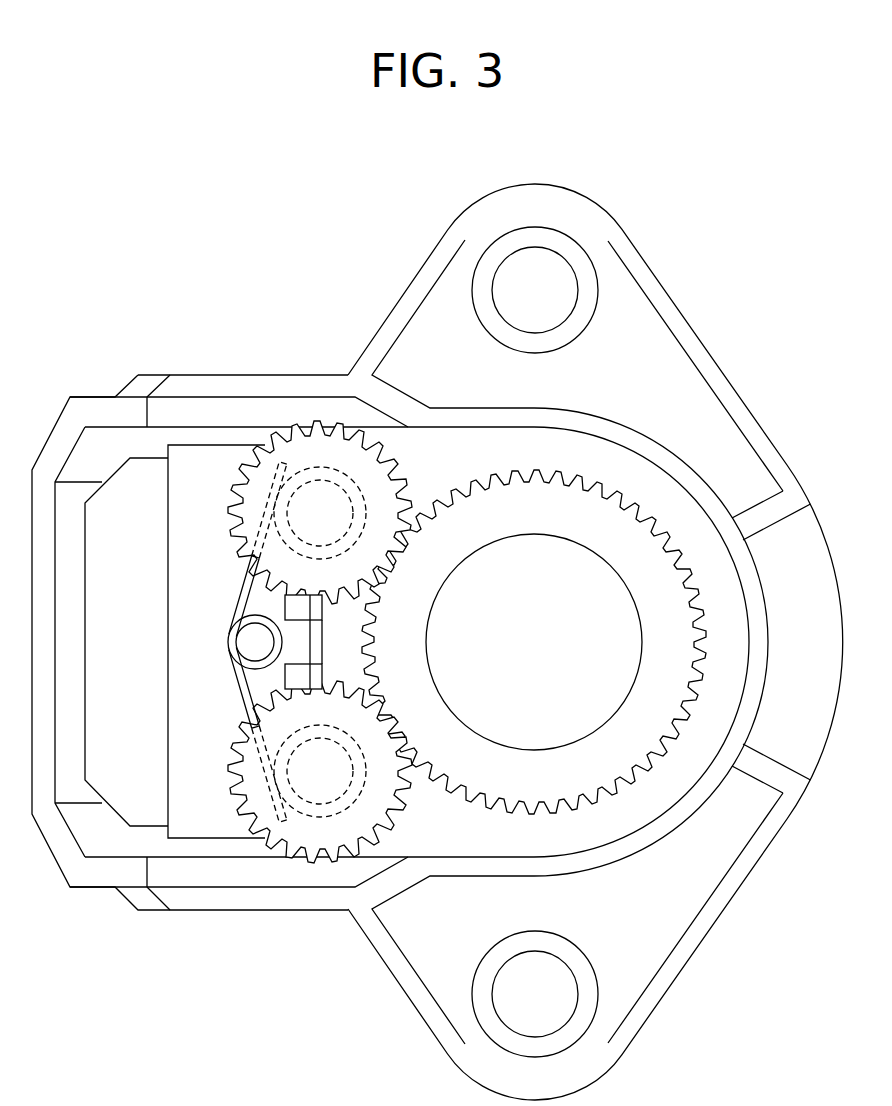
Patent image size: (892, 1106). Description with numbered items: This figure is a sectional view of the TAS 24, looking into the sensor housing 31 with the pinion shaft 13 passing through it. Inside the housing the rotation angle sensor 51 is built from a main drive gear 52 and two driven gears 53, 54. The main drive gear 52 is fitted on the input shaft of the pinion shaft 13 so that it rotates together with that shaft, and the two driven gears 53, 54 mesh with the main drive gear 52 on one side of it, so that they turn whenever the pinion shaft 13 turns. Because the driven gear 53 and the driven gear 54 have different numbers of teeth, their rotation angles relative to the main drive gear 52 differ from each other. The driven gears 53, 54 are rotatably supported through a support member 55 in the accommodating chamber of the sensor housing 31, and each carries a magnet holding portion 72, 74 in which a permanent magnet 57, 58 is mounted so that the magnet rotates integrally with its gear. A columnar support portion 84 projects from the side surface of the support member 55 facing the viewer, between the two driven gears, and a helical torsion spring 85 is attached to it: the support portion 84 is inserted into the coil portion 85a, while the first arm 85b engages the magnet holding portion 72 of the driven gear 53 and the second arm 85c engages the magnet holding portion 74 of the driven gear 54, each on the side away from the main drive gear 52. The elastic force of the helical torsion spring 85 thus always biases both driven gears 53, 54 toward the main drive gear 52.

The pinion shaft 13 is at (577, 563).
The TAS 24 is at (180, 342).
The sensor housing 31 is at (637, 430).
The rotation angle sensor 51 is at (534, 591).
The main drive gear 52 is at (563, 470).
The driven gear 53 is at (321, 467).
The driven gear 54 is at (322, 814).
The support member 55 is at (168, 500).
The permanent magnet 57 is at (367, 500).
The permanent magnet 58 is at (367, 784).
The magnet holding portion 72 is at (318, 467).
The magnet holding portion 74 is at (318, 817).
The support portion 84 is at (248, 650).
The helical torsion spring 85 is at (230, 642).
The coil portion 85a is at (242, 596).
The first arm 85b is at (243, 580).
The second arm 85c is at (232, 673).